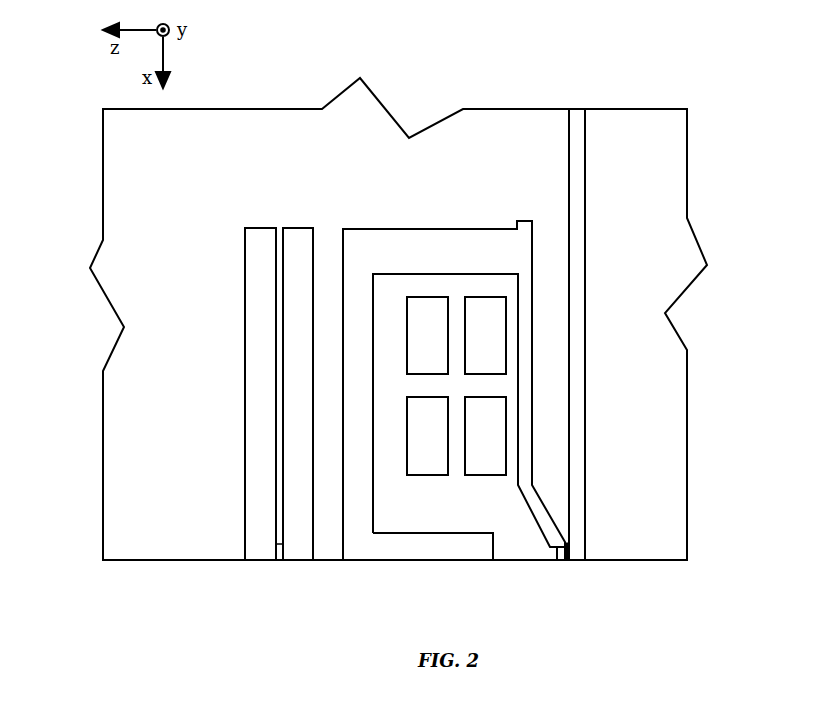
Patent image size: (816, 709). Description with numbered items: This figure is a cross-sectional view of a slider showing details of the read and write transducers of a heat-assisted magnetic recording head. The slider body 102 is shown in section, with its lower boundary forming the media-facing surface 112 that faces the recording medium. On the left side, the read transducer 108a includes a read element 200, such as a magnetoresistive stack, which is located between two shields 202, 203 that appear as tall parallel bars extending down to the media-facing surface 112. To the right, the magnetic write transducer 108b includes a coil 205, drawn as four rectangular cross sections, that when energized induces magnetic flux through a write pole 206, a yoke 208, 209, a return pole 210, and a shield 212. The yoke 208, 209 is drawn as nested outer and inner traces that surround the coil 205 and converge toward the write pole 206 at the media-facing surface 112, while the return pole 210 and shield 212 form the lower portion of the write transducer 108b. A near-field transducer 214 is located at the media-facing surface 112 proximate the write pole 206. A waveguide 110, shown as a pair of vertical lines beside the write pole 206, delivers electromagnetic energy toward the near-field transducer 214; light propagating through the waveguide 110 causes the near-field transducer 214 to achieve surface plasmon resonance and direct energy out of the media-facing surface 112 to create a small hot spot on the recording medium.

The substrate 102 is at (242, 118).
The waveguide 110 is at (578, 109).
The media-facing surface 112 is at (672, 563).
The shield 202 is at (254, 228).
The shield 203 is at (296, 228).
The read element 200 is at (279, 560).
The yoke 209 is at (410, 229).
The yoke 208 is at (530, 362).
The return pole 210 is at (372, 505).
The shield 212 is at (437, 560).
The near-field transducer 214 is at (567, 540).
The write pole 206 is at (560, 560).
The coil 205 is at (478, 297).
The read transducer 108a is at (256, 602).
The magnetic write transducer 108b is at (376, 600).